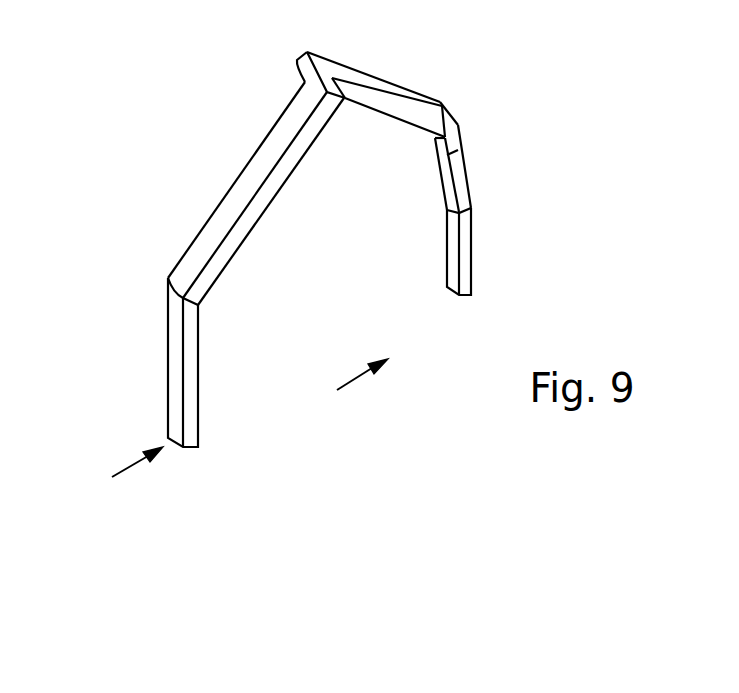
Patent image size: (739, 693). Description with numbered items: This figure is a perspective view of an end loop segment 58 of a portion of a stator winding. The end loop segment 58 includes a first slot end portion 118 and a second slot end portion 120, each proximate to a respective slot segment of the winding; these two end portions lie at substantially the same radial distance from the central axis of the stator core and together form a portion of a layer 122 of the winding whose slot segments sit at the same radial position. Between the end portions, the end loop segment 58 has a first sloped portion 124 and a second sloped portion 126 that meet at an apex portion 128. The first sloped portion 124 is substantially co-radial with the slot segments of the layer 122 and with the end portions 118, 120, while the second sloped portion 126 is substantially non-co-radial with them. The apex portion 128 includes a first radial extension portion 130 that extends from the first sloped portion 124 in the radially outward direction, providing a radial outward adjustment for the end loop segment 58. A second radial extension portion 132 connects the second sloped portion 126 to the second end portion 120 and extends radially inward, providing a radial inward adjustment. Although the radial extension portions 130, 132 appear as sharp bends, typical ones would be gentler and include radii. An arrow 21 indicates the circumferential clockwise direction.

The end loop segment 58 is at (236, 102).
The first slot end portion 118 is at (178, 352).
The second slot end portion 120 is at (467, 250).
The layer 122 is at (132, 467).
The first sloped portion 124 is at (257, 175).
The second sloped portion 126 is at (418, 100).
The apex portion 128 is at (306, 52).
The first radial extension portion 130 is at (346, 89).
The second radial extension portion 132 is at (463, 185).
The arrow 21 is at (358, 375).